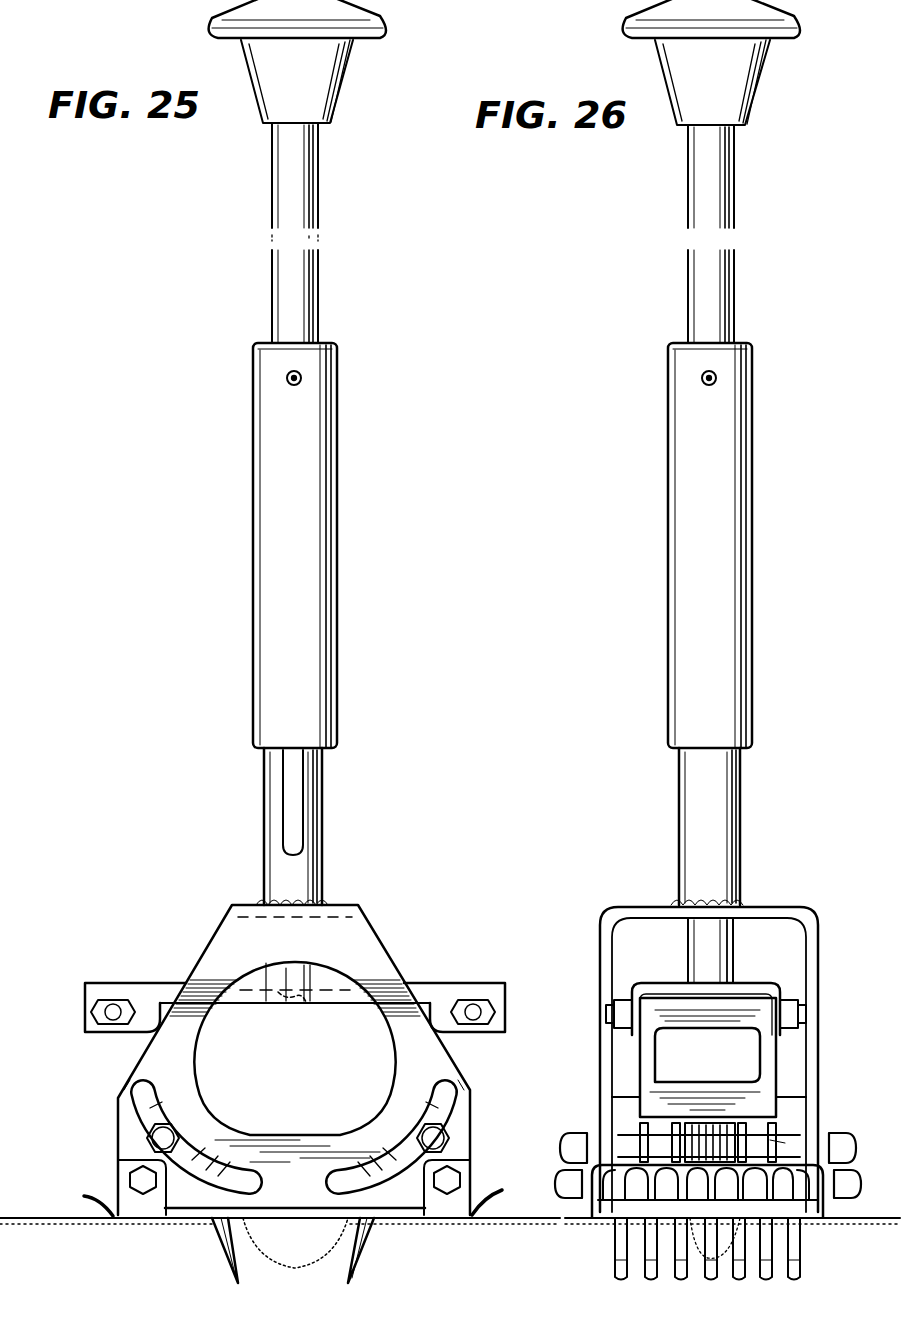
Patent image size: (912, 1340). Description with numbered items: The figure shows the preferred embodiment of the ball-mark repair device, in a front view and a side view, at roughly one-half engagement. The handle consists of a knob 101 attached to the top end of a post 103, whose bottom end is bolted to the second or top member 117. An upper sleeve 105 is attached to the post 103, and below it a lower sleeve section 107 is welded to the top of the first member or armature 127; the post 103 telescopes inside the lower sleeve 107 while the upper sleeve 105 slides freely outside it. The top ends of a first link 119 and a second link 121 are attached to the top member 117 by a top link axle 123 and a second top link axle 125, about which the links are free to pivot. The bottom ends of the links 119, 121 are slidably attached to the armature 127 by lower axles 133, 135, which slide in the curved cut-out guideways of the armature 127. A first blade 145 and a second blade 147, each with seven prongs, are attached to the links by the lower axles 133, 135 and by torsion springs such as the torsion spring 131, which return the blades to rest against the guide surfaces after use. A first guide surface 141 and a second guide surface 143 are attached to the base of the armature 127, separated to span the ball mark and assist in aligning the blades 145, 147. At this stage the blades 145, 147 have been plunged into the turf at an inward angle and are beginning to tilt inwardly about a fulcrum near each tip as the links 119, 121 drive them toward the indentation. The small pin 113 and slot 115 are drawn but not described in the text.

In FIG. 25, the knob 101 is at (385, 22).
In FIG. 26, the knob 101 is at (795, 24).
In FIG. 25, the post 103 is at (318, 290).
In FIG. 26, the post 103 is at (736, 207).
In FIG. 25, the upper sleeve 105 is at (322, 444).
In FIG. 26, the upper sleeve 105 is at (738, 441).
In FIG. 25, the lower sleeve section 107 is at (320, 835).
In FIG. 26, the lower sleeve section 107 is at (736, 835).
In FIG. 25, the cross pin 113 is at (285, 1002).
In FIG. 25, the slot 115 is at (300, 789).
In FIG. 25, the second or top member 117 is at (432, 983).
In FIG. 26, the second or top member 117 is at (772, 992).
In FIG. 25, the first link 119 is at (120, 1080).
In FIG. 25, the second link 121 is at (478, 1058).
In FIG. 26, the second link 121 is at (770, 1055).
In FIG. 25, the top link axle 123 is at (110, 1026).
In FIG. 25, the second top link axle 125 is at (483, 997).
In FIG. 26, the second top link axle 125 is at (800, 1014).
In FIG. 25, the first member or armature 127 is at (365, 916).
In FIG. 26, the first member or armature 127 is at (814, 910).
In FIG. 26, the torsion spring 131 is at (680, 1148).
In FIG. 25, the lower axle 133 is at (150, 1140).
In FIG. 25, the lower axle 135 is at (445, 1140).
In FIG. 26, the lower axle 135 is at (790, 1143).
In FIG. 25, the first guide surface 141 is at (96, 1204).
In FIG. 25, the second guide surface 143 is at (515, 1184).
In FIG. 26, the second guide surface 143 is at (775, 1212).
In FIG. 25, the first blade 145 is at (227, 1259).
In FIG. 25, the second blade 147 is at (365, 1258).
In FIG. 26, the second blade 147 is at (800, 1272).